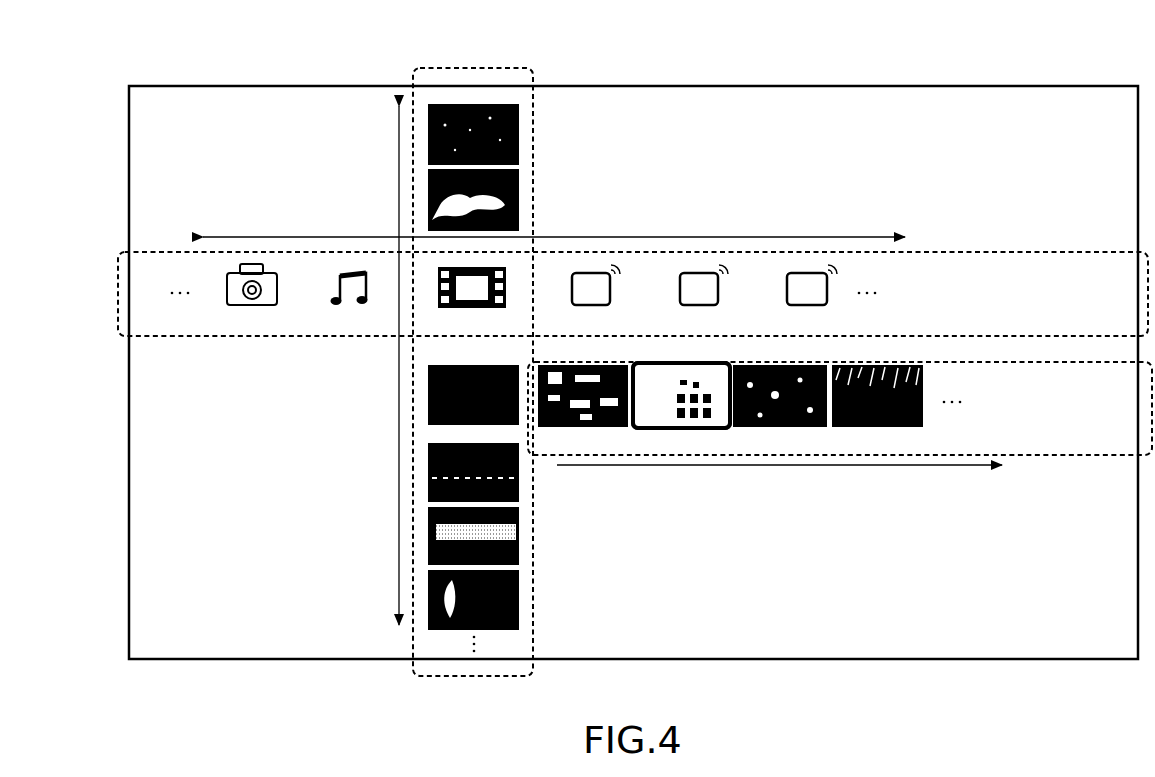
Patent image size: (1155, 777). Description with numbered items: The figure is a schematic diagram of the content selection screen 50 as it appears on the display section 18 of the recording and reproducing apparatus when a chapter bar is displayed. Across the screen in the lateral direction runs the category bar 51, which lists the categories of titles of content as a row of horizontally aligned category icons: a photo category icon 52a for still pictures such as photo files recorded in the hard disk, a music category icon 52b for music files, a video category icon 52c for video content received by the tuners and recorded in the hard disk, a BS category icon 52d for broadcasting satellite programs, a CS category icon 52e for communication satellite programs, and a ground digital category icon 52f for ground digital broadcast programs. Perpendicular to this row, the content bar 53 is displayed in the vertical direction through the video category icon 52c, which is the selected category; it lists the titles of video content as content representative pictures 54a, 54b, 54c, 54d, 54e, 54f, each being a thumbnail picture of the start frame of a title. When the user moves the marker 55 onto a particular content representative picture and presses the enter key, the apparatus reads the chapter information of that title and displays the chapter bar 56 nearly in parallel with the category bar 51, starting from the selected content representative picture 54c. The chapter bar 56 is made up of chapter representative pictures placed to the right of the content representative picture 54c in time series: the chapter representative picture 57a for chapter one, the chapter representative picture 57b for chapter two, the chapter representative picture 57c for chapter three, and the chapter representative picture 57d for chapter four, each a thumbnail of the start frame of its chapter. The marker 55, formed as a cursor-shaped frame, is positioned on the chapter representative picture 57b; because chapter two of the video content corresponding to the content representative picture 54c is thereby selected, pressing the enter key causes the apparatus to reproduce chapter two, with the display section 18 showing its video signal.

The display section 18 is at (972, 86).
The content selection screen 50 is at (727, 106).
The category bar 51 is at (943, 250).
The photo category icon 52a is at (247, 337).
The music category icon 52b is at (350, 337).
The video category icon 52c is at (438, 330).
The BS category icon 52d is at (612, 290).
The CS category icon 52e is at (720, 290).
The ground digital category icon 52f is at (829, 290).
The content bar 53 is at (480, 68).
The content representative picture 54a is at (519, 132).
The content representative picture 54b is at (519, 188).
The content representative picture 54c is at (428, 405).
The content representative picture 54d is at (428, 465).
The content representative picture 54e is at (519, 539).
The content representative picture 54f is at (519, 600).
The marker 55 is at (645, 432).
The chapter bar 56 is at (1073, 457).
The chapter representative picture 57a is at (597, 378).
The chapter representative picture 57b is at (690, 375).
The chapter representative picture 57c is at (787, 378).
The chapter representative picture 57d is at (878, 378).